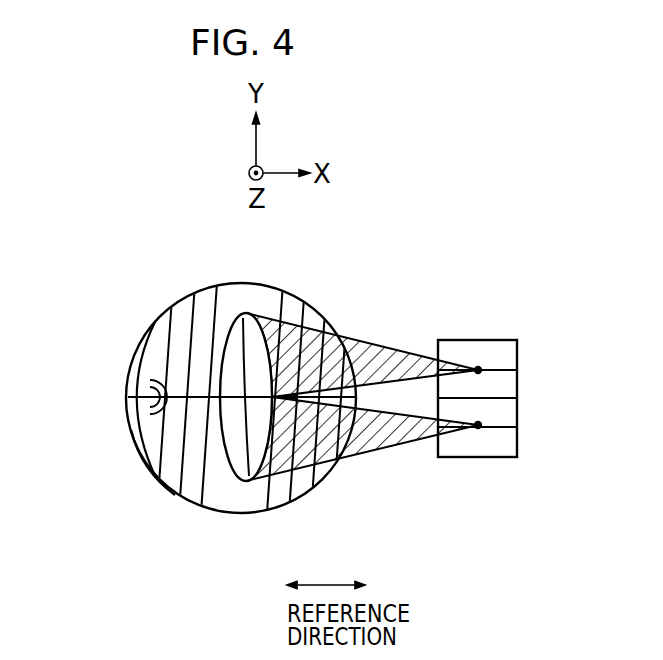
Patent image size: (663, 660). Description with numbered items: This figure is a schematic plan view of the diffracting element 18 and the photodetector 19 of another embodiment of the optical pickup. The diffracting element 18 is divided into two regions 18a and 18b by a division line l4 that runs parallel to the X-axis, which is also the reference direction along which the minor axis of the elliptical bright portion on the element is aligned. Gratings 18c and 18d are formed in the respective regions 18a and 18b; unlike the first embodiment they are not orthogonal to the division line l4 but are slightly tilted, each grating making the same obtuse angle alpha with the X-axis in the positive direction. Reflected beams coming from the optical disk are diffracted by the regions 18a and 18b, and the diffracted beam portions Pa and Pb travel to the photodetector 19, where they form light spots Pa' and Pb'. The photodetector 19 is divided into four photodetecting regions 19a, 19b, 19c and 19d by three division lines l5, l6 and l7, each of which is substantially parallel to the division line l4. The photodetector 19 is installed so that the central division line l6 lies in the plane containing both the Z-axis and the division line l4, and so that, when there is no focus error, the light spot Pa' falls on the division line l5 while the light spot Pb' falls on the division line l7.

The diffracting element 18 is at (156, 308).
The region 18a is at (220, 297).
The region 18b is at (197, 488).
The grating 18c is at (152, 326).
The grating 18d is at (145, 472).
The photodetector 19 is at (483, 412).
The photodetecting region 19a is at (497, 350).
The photodetecting region 19b is at (503, 387).
The photodetecting region 19c is at (518, 442).
The photodetecting region 19d is at (518, 447).
The division line l4 is at (128, 398).
The division line l5 is at (506, 362).
The division line l6 is at (505, 418).
The division line l7 is at (496, 430).
The first light beam Pa is at (362, 319).
The second light beam Pb is at (359, 484).
The light spot Pa' is at (447, 314).
The light spot Pb' is at (453, 496).